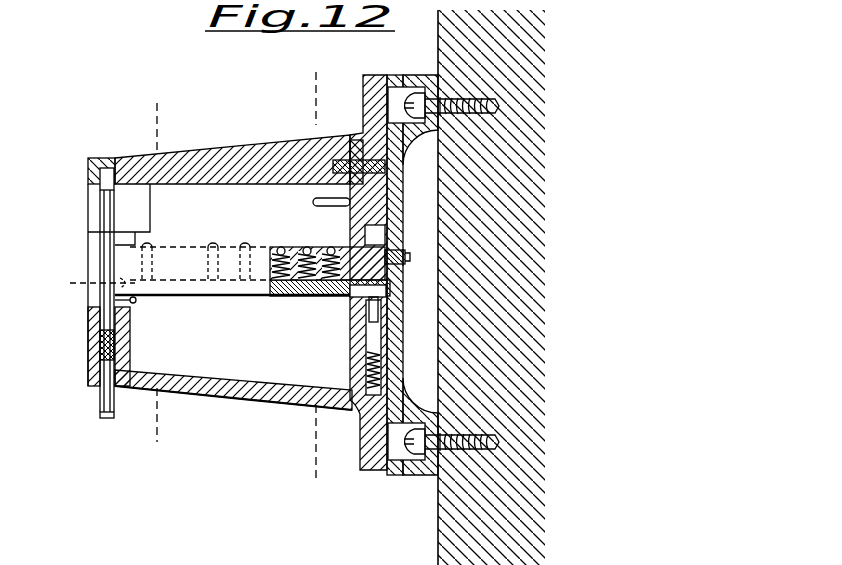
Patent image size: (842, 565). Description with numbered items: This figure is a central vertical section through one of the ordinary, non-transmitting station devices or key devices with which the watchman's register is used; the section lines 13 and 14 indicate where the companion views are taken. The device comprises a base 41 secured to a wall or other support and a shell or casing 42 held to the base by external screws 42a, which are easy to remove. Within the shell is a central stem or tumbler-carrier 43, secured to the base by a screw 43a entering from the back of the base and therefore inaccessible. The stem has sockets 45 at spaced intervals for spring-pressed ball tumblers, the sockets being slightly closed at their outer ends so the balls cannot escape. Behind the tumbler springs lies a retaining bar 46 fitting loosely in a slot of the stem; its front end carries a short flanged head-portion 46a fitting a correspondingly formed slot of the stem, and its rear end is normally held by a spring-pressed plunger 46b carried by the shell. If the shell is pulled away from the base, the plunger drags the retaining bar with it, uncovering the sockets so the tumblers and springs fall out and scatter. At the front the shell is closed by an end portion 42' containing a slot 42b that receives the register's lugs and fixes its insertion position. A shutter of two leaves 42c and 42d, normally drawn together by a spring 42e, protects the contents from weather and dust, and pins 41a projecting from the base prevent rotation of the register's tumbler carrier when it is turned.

The section line 13- 13 is at (309, 76).
The section line 14- 14 is at (158, 104).
The base 41 is at (399, 352).
The pins 41a is at (326, 203).
The shell 42 is at (237, 272).
The end portion 42' is at (74, 174).
The external screws 42a is at (128, 352).
The slot 42b is at (99, 205).
The shutter leaf 42c is at (100, 343).
The shutter leaf 42d is at (96, 356).
The spring 42e is at (137, 301).
The stem 43 is at (233, 297).
The screw 43a is at (406, 258).
The sockets 45 is at (274, 252).
The retaining bar 46 is at (295, 298).
The flanged head-portion 46a is at (80, 284).
The spring-pressed plunger 46b is at (356, 300).